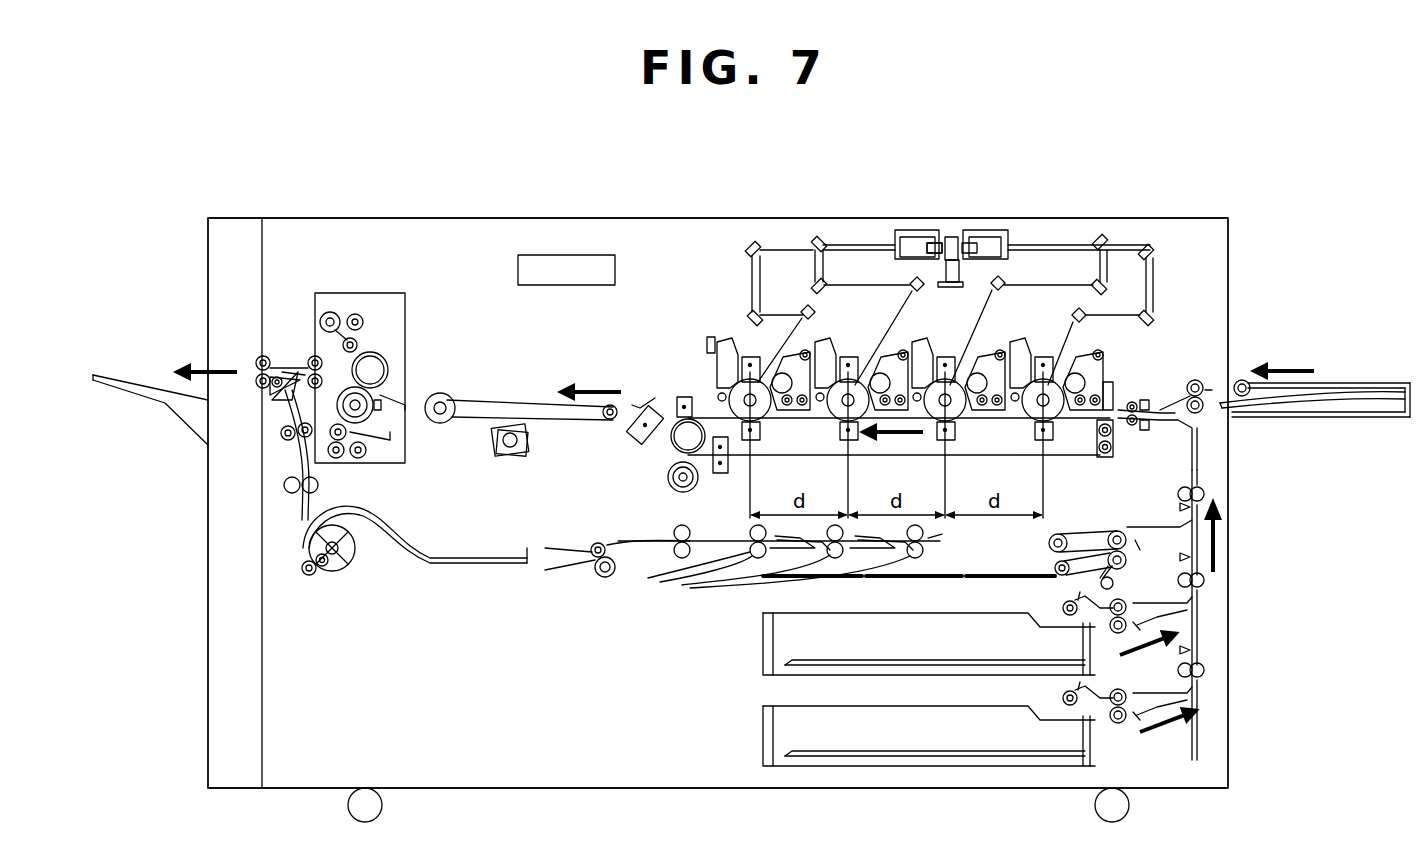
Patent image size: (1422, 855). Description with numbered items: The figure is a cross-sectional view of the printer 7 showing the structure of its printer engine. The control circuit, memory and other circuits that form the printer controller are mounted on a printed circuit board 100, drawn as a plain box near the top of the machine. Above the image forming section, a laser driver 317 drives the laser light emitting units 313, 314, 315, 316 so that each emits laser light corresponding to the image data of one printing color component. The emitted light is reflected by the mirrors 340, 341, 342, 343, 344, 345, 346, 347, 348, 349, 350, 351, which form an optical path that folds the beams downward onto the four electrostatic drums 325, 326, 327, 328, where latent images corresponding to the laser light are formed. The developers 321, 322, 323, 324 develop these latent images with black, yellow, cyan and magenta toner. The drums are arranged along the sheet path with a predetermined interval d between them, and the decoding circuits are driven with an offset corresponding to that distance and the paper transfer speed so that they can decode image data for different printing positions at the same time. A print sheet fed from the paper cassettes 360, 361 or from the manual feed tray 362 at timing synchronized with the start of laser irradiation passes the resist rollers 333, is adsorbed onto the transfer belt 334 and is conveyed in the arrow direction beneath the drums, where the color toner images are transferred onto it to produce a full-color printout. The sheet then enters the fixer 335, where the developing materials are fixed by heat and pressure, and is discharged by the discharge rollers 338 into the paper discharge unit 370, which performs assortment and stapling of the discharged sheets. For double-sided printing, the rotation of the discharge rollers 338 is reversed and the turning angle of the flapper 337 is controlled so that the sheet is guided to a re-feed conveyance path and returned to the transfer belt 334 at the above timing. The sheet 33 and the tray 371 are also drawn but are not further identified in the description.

The printer 7 is at (605, 218).
The printed circuit board 100 is at (550, 286).
The laser light emitting unit 313 is at (902, 228).
The laser light emitting unit 314 is at (917, 257).
The laser light emitting unit 315 is at (1000, 252).
The laser light emitting unit 316 is at (1000, 230).
The laser driver 317 is at (957, 230).
The developer 321 is at (795, 390).
The developer 322 is at (893, 417).
The developer 323 is at (990, 417).
The developer 324 is at (1088, 417).
The electrostatic drum 325 is at (737, 413).
The electrostatic drum 326 is at (836, 445).
The electrostatic drum 327 is at (933, 420).
The electrostatic drum 328 is at (1028, 417).
The recording sheet 33 is at (673, 560).
The resist rollers 333 is at (1150, 400).
The transfer belt 334 is at (1118, 395).
The fixer 335 is at (410, 332).
The flapper 337 is at (293, 380).
The discharge rollers 338 is at (257, 360).
The mirror 340 is at (745, 250).
The mirror 341 is at (746, 321).
The mirror 342 is at (803, 308).
The mirror 343 is at (820, 238).
The mirror 344 is at (823, 288).
The mirror 345 is at (920, 290).
The mirror 346 is at (1103, 237).
The mirror 347 is at (1097, 280).
The mirror 348 is at (1004, 288).
The mirror 349 is at (1148, 247).
The mirror 350 is at (1152, 310).
The mirror 351 is at (1085, 320).
The paper cassette 360 is at (762, 648).
The paper cassette 361 is at (762, 738).
The manual feed tray 362 is at (1258, 418).
The paper discharge unit 370 is at (207, 745).
The discharge tray 371 is at (132, 376).